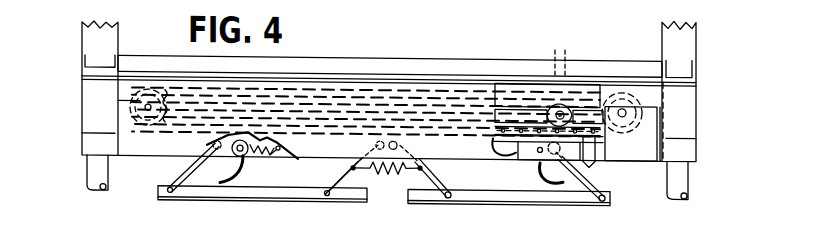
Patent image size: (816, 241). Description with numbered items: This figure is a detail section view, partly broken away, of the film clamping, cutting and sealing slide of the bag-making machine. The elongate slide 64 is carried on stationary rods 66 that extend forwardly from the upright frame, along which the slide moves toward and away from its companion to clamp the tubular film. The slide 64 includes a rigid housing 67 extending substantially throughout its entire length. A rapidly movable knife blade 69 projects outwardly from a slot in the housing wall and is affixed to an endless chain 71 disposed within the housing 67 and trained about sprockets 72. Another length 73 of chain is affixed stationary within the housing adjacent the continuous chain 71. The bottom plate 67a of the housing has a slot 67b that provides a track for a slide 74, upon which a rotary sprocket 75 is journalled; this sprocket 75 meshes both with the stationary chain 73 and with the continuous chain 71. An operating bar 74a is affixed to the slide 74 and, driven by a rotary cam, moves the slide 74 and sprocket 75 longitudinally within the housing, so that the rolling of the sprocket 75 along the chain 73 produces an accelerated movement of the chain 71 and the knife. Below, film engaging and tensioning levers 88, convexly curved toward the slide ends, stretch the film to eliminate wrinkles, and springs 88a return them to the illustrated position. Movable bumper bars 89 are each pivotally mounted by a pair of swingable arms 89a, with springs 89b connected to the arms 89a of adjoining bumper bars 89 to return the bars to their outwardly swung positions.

The elongate slide 64 is at (170, 52).
The stationary rods 66 is at (87, 172).
The rigid housing 67 is at (318, 84).
The bottom plate 67a is at (506, 104).
The slot 67b is at (523, 107).
The knife blade 69 is at (586, 141).
The endless chain 71 is at (510, 134).
The sprockets 72 is at (628, 98).
The length of chain 73 is at (571, 124).
The slide 74 is at (590, 112).
The operating bar 74a is at (566, 45).
The rotary sprocket 75 is at (543, 126).
The film engaging and tensioning levers 88 is at (241, 166).
The springs 88a is at (275, 153).
The movable bumper bars 89 is at (422, 191).
The swingable arms 89a is at (440, 177).
The springs 89b is at (387, 170).